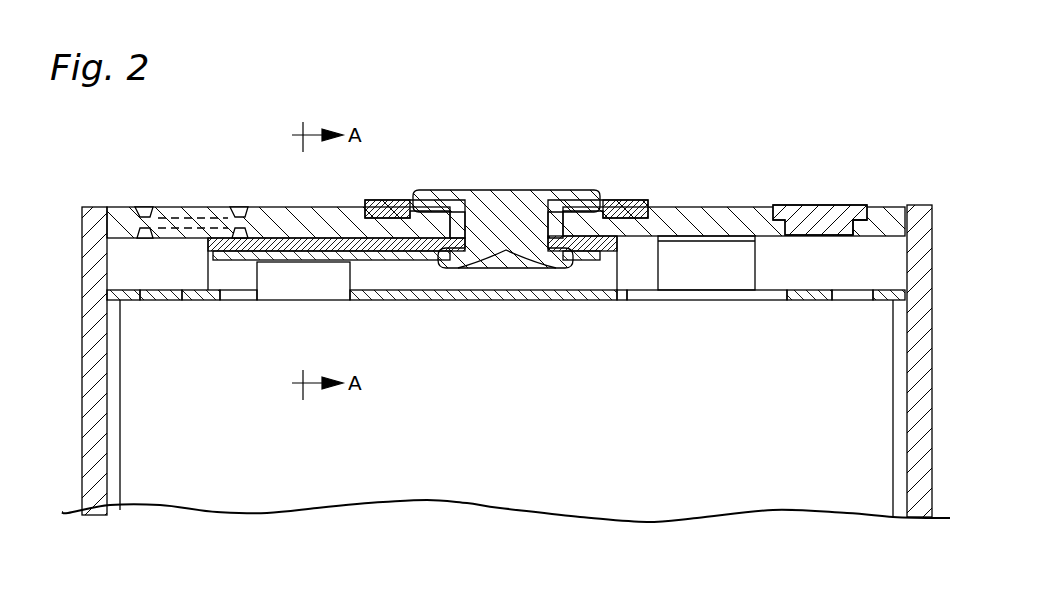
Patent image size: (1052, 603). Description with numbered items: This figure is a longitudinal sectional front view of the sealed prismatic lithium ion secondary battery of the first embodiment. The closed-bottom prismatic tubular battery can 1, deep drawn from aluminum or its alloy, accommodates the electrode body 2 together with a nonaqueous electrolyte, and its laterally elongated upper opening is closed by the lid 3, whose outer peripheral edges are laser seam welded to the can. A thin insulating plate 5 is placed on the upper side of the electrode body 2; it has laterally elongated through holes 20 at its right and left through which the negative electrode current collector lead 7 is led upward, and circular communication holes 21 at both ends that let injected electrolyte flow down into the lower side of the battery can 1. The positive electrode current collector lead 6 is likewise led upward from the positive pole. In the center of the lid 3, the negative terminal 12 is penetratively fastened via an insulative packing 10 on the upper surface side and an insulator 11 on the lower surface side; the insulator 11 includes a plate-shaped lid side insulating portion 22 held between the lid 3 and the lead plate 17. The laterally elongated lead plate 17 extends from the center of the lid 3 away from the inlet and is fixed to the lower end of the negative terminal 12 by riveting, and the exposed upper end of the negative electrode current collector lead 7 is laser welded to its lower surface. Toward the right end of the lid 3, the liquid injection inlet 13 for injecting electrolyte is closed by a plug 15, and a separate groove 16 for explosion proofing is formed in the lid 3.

The battery can 1 is at (82, 240).
The electrode body 2 is at (523, 475).
The lid 3 is at (690, 198).
The insulating plate 5 is at (538, 312).
The positive electrode current collector lead 6 is at (705, 244).
The negative electrode current collector lead 7 is at (297, 266).
The insulative packing 10 is at (385, 200).
The insulator 11 is at (605, 270).
The negative terminal 12 is at (490, 190).
The liquid injection inlet 13 is at (845, 230).
The plug 15 is at (810, 207).
The groove for explosion proofing 16 is at (147, 207).
The lead plate 17 is at (238, 262).
The through holes 20 is at (390, 301).
The communication holes 21 is at (140, 301).
The lid side insulating portion 22 is at (412, 244).